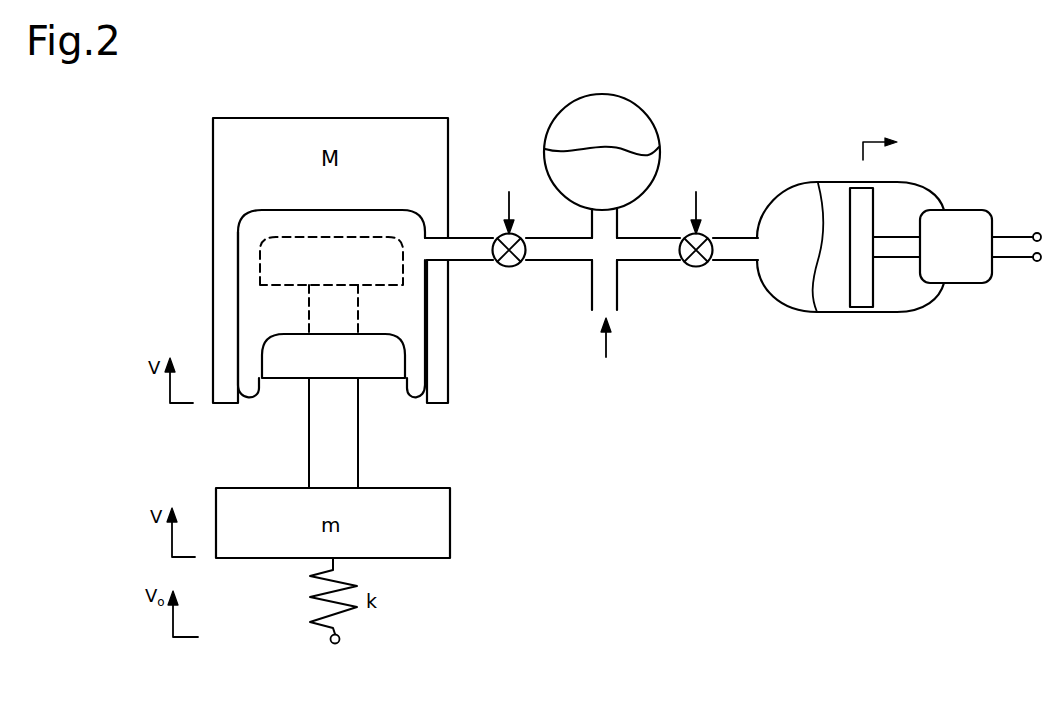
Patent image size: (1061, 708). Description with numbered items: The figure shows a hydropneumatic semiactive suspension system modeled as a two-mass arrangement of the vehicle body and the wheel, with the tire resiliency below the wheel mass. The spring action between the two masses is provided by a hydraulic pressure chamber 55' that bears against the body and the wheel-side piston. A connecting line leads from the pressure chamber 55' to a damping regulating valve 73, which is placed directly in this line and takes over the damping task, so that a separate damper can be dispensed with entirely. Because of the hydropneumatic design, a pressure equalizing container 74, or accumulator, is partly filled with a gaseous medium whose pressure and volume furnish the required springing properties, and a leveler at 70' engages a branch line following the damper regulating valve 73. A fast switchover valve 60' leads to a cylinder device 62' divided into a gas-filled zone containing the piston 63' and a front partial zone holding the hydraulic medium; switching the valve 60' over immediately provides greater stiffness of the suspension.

The pressure chamber 55' is at (380, 303).
The damping regulating valve 73 is at (509, 267).
The leveler 70' is at (628, 283).
The pressure equalizing container 74 is at (638, 128).
The fast switchover valve 60' is at (701, 269).
The cylinder device 62' is at (899, 254).
The piston 63' is at (848, 283).